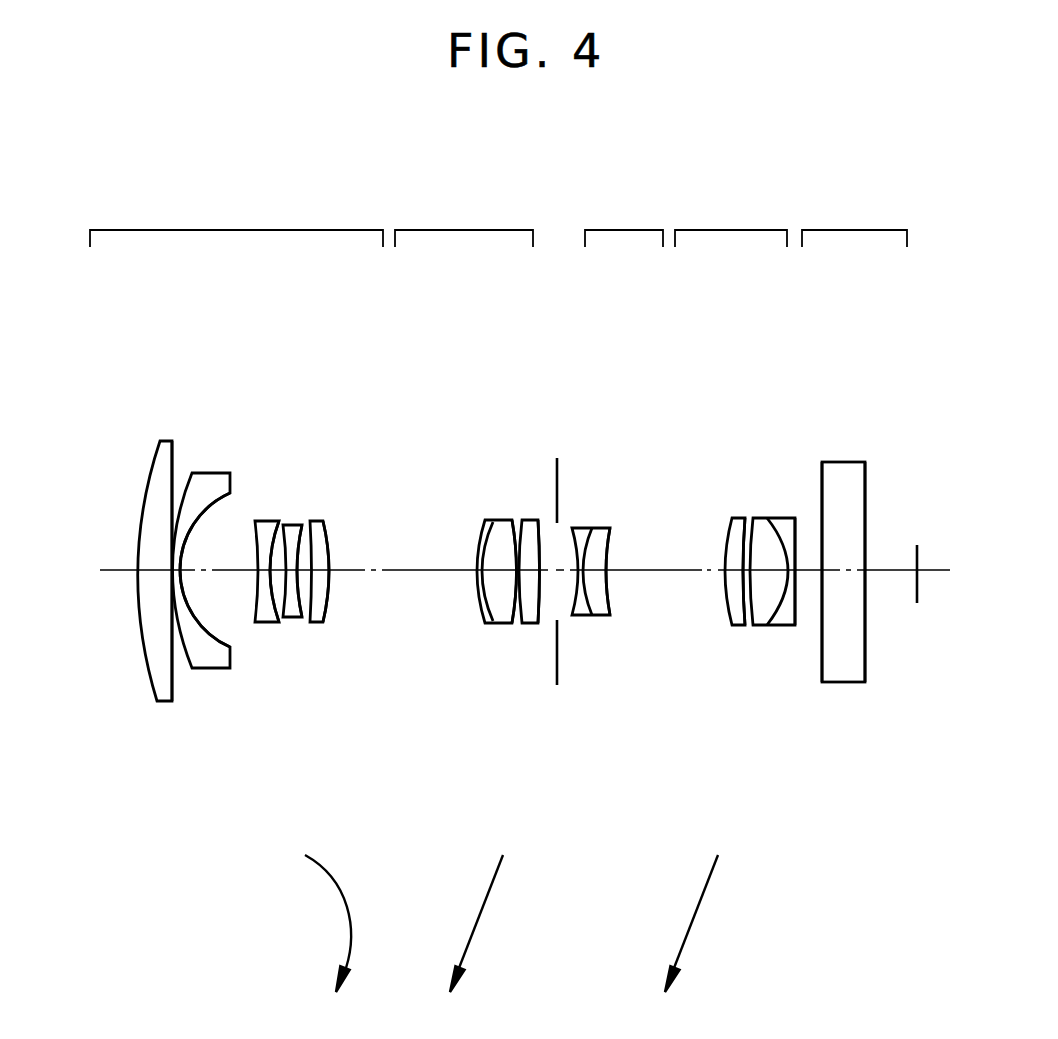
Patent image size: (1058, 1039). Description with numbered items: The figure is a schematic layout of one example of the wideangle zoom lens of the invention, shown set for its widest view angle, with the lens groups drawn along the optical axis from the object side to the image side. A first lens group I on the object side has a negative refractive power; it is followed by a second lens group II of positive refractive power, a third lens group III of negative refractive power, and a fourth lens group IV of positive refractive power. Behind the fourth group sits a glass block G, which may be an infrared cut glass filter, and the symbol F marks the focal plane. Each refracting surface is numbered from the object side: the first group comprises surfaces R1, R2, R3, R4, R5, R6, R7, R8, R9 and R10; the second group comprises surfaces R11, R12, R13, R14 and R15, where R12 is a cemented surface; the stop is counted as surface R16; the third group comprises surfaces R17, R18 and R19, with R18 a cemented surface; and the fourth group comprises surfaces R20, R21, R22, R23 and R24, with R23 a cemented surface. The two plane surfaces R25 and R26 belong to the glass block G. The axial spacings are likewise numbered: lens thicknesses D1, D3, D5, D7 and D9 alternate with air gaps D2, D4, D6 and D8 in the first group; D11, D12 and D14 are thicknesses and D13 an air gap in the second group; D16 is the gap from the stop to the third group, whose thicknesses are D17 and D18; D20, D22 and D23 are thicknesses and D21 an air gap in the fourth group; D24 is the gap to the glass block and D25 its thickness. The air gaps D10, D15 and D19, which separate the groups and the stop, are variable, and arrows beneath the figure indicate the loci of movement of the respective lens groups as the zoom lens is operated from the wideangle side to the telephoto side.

The first lens group I is at (254, 222).
The second lens group II is at (469, 222).
The third lens group III is at (637, 222).
The fourth lens group IV is at (741, 198).
The glass block G is at (854, 440).
The focal plane F is at (917, 545).
The first lens surface R1 is at (148, 477).
The second lens surface R2 is at (170, 458).
The third lens surface R3 is at (193, 478).
The fourth lens surface R4 is at (215, 503).
The fifth lens surface R5 is at (256, 524).
The sixth lens surface R6 is at (266, 523).
The seventh lens surface R7 is at (285, 525).
The eighth lens surface R8 is at (297, 525).
The ninth lens surface R9 is at (319, 523).
The tenth lens surface R10 is at (332, 528).
The eleventh lens surface R11 is at (480, 527).
The twelfth lens surface R12 is at (498, 520).
The thirteenth lens surface R13 is at (512, 520).
The fourteenth lens surface R14 is at (525, 522).
The fifteenth lens surface R15 is at (540, 522).
The stop R16 is at (558, 459).
The seventeenth lens surface R17 is at (566, 528).
The eighteenth lens surface R18 is at (581, 528).
The nineteenth lens surface R19 is at (625, 528).
The twentieth lens surface R20 is at (725, 525).
The twenty-first lens surface R21 is at (738, 520).
The twenty-second lens surface R22 is at (753, 522).
The twenty-third lens surface R23 is at (768, 522).
The twenty-fourth lens surface R24 is at (800, 522).
The twenty-fifth surface R25 is at (822, 485).
The twenty-sixth surface R26 is at (865, 487).
The first lens thickness D1 is at (155, 580).
The second air gap D2 is at (174, 580).
The third lens thickness D3 is at (194, 582).
The fourth air gap D4 is at (247, 578).
The fifth lens thickness D5 is at (263, 578).
The sixth air gap D6 is at (281, 578).
The seventh lens thickness D7 is at (292, 578).
The eighth air gap D8 is at (305, 578).
The ninth lens thickness D9 is at (321, 578).
The tenth air gap D10 is at (400, 575).
The eleventh lens thickness D11 is at (461, 577).
The twelfth lens thickness D12 is at (499, 577).
The thirteenth air gap D13 is at (519, 577).
The fourteenth lens thickness D14 is at (533, 577).
The fifteenth air gap D15 is at (548, 577).
The sixteenth air gap D16 is at (567, 577).
The seventeenth lens thickness D17 is at (580, 577).
The eighteenth lens thickness D18 is at (597, 577).
The nineteenth air gap D19 is at (668, 575).
The twentieth lens thickness D20 is at (727, 578).
The twenty-first air gap D21 is at (745, 578).
The twenty-second lens thickness D22 is at (763, 578).
The twenty-third lens thickness D23 is at (790, 578).
The twenty-fourth air gap D24 is at (808, 575).
The twenty-fifth thickness D25 is at (848, 575).